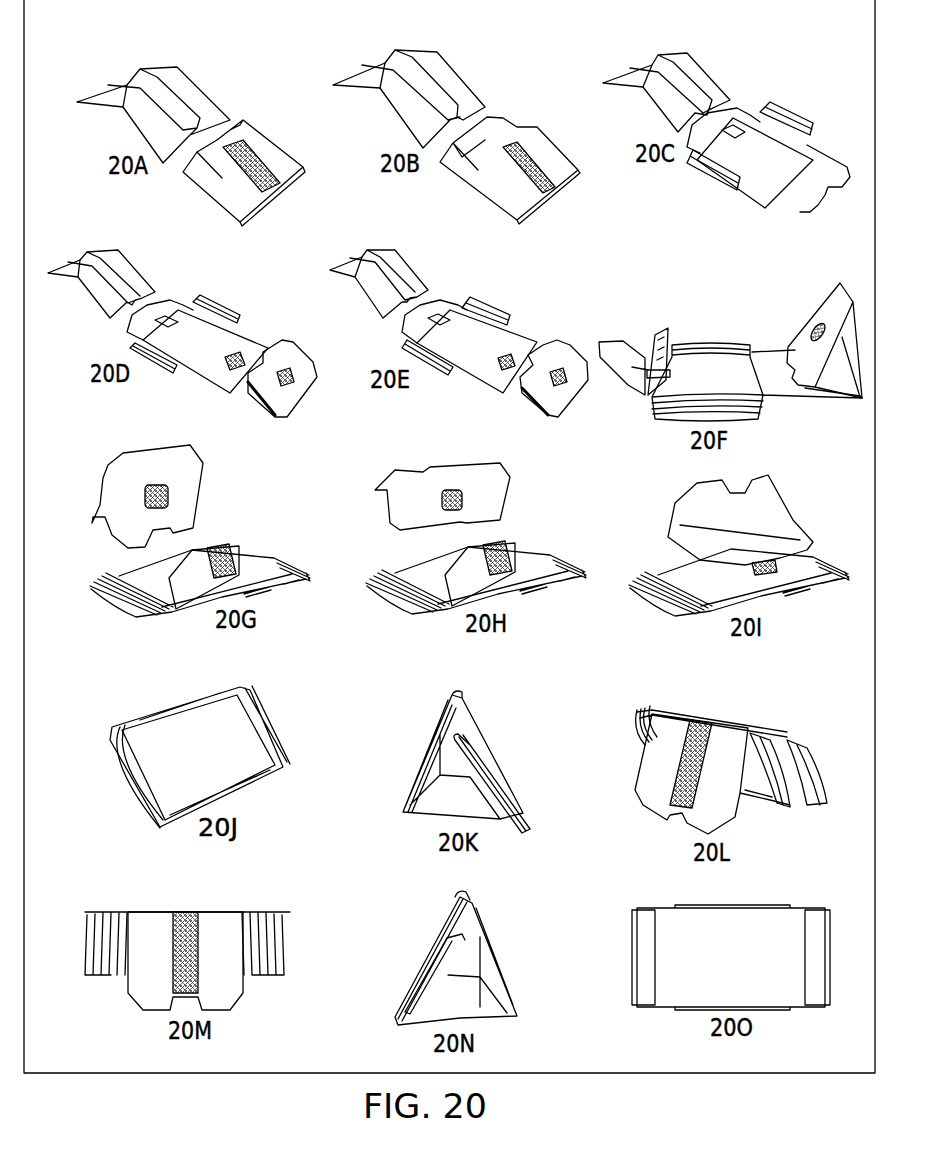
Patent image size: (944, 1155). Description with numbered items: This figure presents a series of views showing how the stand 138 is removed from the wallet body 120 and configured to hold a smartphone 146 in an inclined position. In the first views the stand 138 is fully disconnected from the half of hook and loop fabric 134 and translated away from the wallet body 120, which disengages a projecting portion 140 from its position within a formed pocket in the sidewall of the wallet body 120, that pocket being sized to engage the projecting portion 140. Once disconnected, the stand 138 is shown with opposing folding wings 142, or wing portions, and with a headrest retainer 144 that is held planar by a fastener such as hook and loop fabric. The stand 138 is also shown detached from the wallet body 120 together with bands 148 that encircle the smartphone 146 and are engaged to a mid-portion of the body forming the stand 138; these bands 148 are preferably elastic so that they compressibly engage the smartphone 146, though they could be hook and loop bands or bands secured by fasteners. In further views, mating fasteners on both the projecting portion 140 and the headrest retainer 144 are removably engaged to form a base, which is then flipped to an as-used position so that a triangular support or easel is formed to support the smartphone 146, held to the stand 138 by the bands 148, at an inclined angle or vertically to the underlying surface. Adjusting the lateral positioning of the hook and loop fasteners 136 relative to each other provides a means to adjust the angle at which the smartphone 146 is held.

The wallet body 120 is at (188, 92).
The hook and loop fabric 134 is at (142, 76).
The hook and loop fasteners 136 is at (293, 382).
The stand 138 is at (273, 153).
The projecting portion 140 is at (482, 110).
The folding wings 142 is at (793, 130).
The headrest retainer 144 is at (290, 348).
The smartphone 146 is at (233, 592).
The bands 148 is at (110, 580).